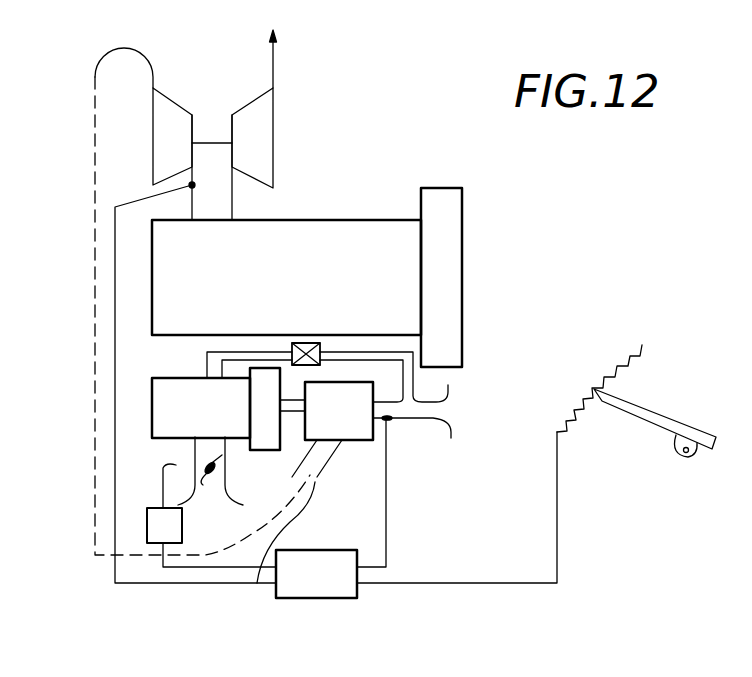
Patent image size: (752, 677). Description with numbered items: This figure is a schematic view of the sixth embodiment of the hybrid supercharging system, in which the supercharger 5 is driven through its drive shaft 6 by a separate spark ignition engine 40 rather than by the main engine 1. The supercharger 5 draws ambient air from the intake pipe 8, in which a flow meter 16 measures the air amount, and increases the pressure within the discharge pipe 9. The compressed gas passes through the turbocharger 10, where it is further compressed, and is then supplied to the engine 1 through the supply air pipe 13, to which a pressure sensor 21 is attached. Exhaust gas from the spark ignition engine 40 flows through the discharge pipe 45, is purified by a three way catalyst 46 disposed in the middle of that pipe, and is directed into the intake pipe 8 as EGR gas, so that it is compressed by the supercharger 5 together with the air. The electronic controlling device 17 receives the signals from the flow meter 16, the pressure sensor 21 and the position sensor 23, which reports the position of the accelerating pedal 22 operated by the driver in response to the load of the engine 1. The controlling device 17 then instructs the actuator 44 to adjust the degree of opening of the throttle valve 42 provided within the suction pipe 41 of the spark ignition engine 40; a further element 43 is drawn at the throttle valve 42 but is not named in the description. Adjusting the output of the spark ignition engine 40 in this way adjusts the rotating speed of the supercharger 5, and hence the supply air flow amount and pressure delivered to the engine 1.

The engine 1 is at (386, 227).
The turbocharger 10 is at (182, 80).
The supply air pipe 13 is at (193, 205).
The pressure sensor 21 is at (192, 185).
The three way catalyst 46 is at (305, 345).
The discharge pipe 45 is at (380, 357).
The spark ignition engine 40 is at (157, 408).
The suction pipe 41 is at (195, 447).
The throttle valve 42 is at (204, 474).
The fuel filter 43 is at (176, 465).
The actuator 44 is at (147, 523).
The drive shaft 6 is at (292, 415).
The supercharger 5 is at (361, 432).
The intake pipe 8 is at (433, 425).
The flow meter 16 is at (390, 422).
The discharge pipe 9 is at (258, 566).
The electronic controlling device 17 is at (331, 595).
The accelerating pedal 22 is at (673, 417).
The position sensor 23 is at (595, 383).